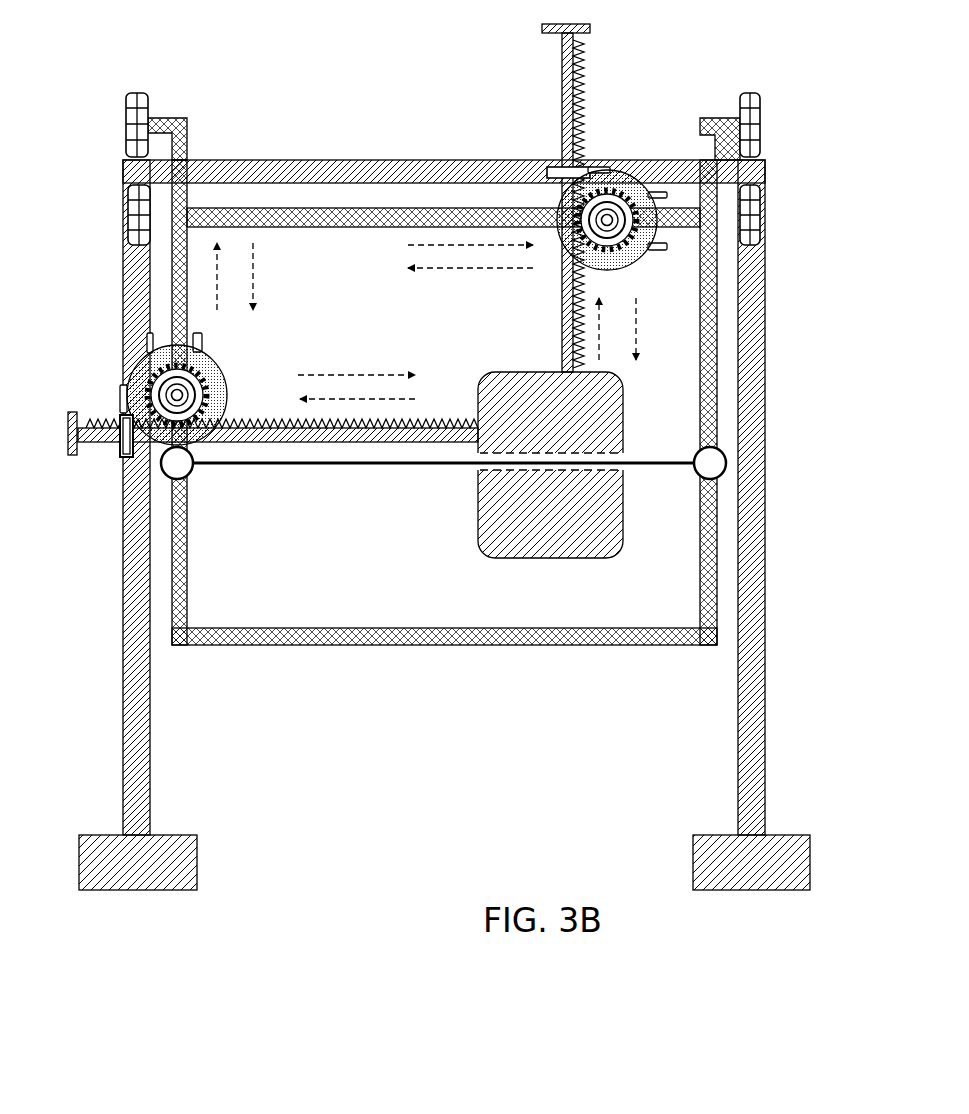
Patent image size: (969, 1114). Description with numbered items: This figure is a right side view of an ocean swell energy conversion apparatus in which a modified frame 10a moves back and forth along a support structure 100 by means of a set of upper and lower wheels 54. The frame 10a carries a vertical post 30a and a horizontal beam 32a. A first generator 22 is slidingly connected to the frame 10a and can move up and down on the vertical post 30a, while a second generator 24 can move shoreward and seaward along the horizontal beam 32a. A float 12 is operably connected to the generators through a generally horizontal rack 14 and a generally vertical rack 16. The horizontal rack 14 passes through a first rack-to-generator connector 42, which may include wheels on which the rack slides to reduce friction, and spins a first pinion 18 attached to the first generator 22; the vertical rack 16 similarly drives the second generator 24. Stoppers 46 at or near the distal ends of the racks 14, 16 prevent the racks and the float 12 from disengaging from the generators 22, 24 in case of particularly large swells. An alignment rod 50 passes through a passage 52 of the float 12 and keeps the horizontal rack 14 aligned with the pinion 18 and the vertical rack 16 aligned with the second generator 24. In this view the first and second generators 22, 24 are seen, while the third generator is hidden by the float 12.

The modified frame 10a is at (281, 655).
The float 12 is at (488, 528).
The horizontal rack 14 is at (248, 420).
The vertical rack 16 is at (562, 93).
The first pinion 18 is at (145, 378).
The first generator 22 is at (127, 360).
The second generator 24 is at (623, 183).
The vertical post 30a is at (187, 520).
The horizontal beam 32a is at (323, 226).
The first rack-to-generator connector 42 is at (122, 457).
The stopper 46 is at (542, 30).
The alignment rod 50 is at (352, 468).
The passage 52 is at (620, 467).
The upper and lower wheels 54 is at (128, 192).
The support structure 100 is at (151, 737).